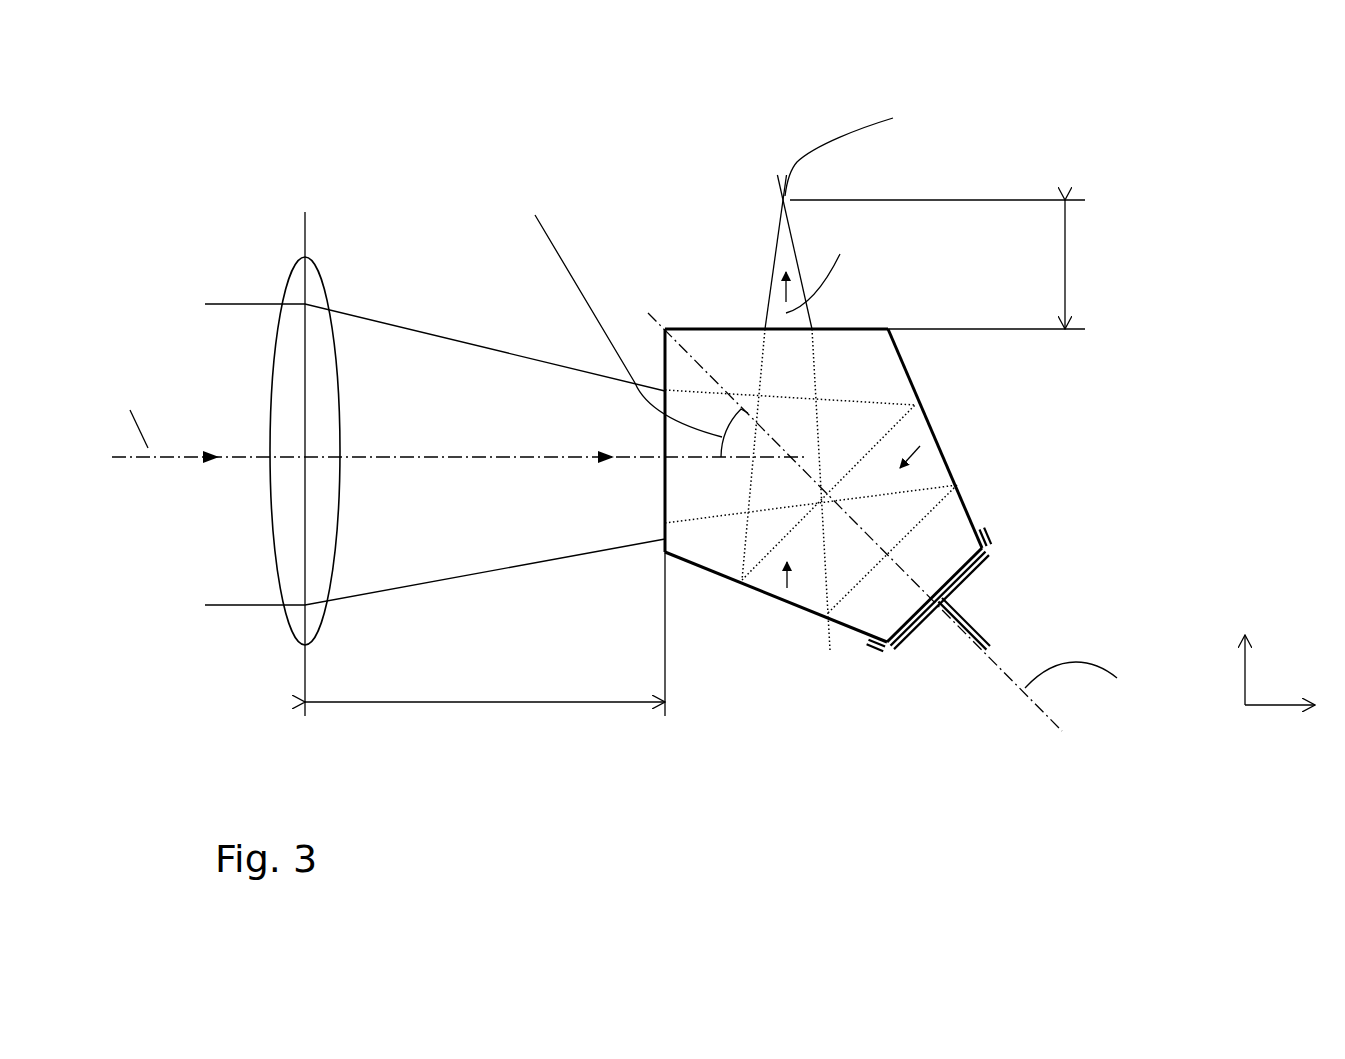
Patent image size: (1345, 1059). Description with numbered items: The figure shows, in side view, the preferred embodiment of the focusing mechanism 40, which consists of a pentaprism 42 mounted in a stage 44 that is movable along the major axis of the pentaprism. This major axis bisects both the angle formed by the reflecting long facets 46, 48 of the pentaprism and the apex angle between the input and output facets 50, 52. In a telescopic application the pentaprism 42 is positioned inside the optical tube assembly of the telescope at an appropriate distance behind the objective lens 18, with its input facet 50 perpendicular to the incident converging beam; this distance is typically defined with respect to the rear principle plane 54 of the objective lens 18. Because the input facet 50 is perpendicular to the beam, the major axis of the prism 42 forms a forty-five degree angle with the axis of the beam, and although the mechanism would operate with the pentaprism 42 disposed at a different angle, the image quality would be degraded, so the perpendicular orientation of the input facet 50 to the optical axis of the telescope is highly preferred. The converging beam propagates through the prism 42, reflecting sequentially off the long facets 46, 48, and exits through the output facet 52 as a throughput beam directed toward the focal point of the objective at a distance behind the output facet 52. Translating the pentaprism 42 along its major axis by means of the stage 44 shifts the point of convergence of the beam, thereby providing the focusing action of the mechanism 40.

The focusing mechanism 40 is at (548, 125).
The objective lens 18 is at (316, 292).
The rear principle plane 54 is at (305, 232).
The pentaprism 42 is at (826, 622).
The output facet 52 is at (711, 327).
The input facet 50 is at (665, 524).
The reflecting long facet 48 is at (777, 600).
The stage 44 is at (910, 634).
The reflecting long facet 46 is at (968, 500).